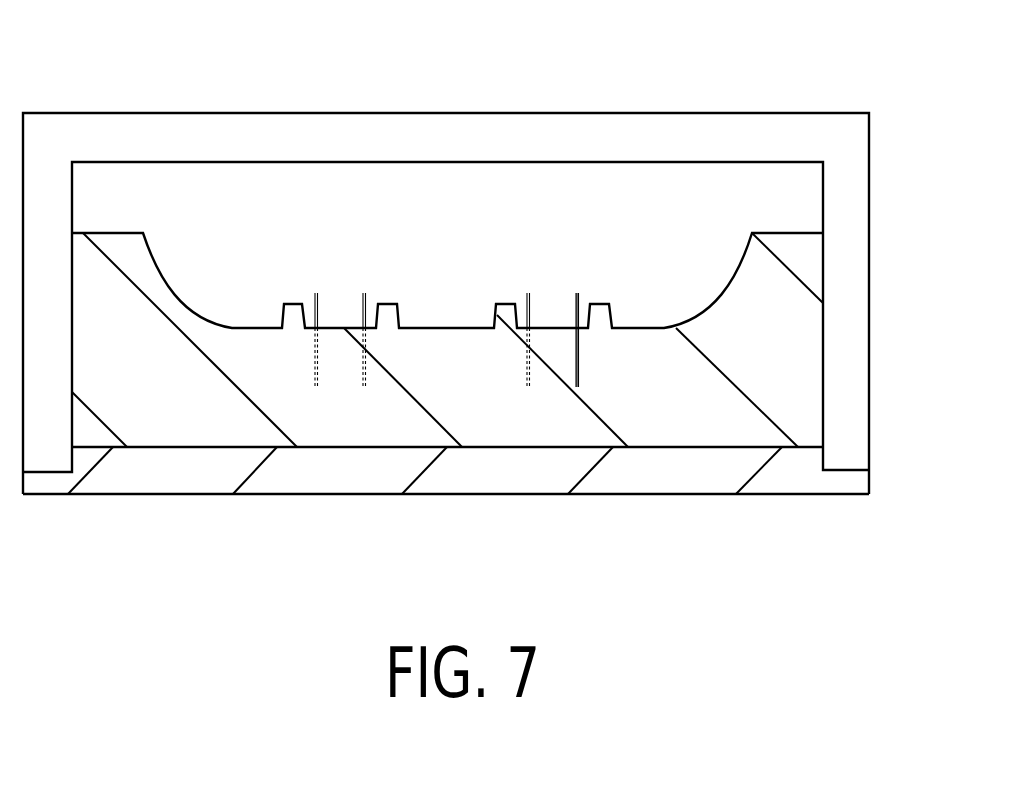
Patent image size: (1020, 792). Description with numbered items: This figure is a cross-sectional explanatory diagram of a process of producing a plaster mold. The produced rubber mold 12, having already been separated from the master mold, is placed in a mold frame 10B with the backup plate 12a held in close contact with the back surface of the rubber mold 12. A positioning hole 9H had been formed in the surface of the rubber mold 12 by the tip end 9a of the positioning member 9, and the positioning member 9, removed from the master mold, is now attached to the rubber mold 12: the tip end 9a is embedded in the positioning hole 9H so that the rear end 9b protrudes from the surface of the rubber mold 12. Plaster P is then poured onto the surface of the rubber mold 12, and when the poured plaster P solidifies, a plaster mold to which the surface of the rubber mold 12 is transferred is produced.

The mold frame 10B is at (362, 125).
The rubber mold 12 is at (502, 435).
The backup plate 12a is at (163, 483).
The positioning member 9 is at (364, 322).
The positioning hole 9H is at (315, 352).
The tip end 9a is at (580, 363).
The rear end 9b is at (580, 302).
The plaster P is at (772, 189).